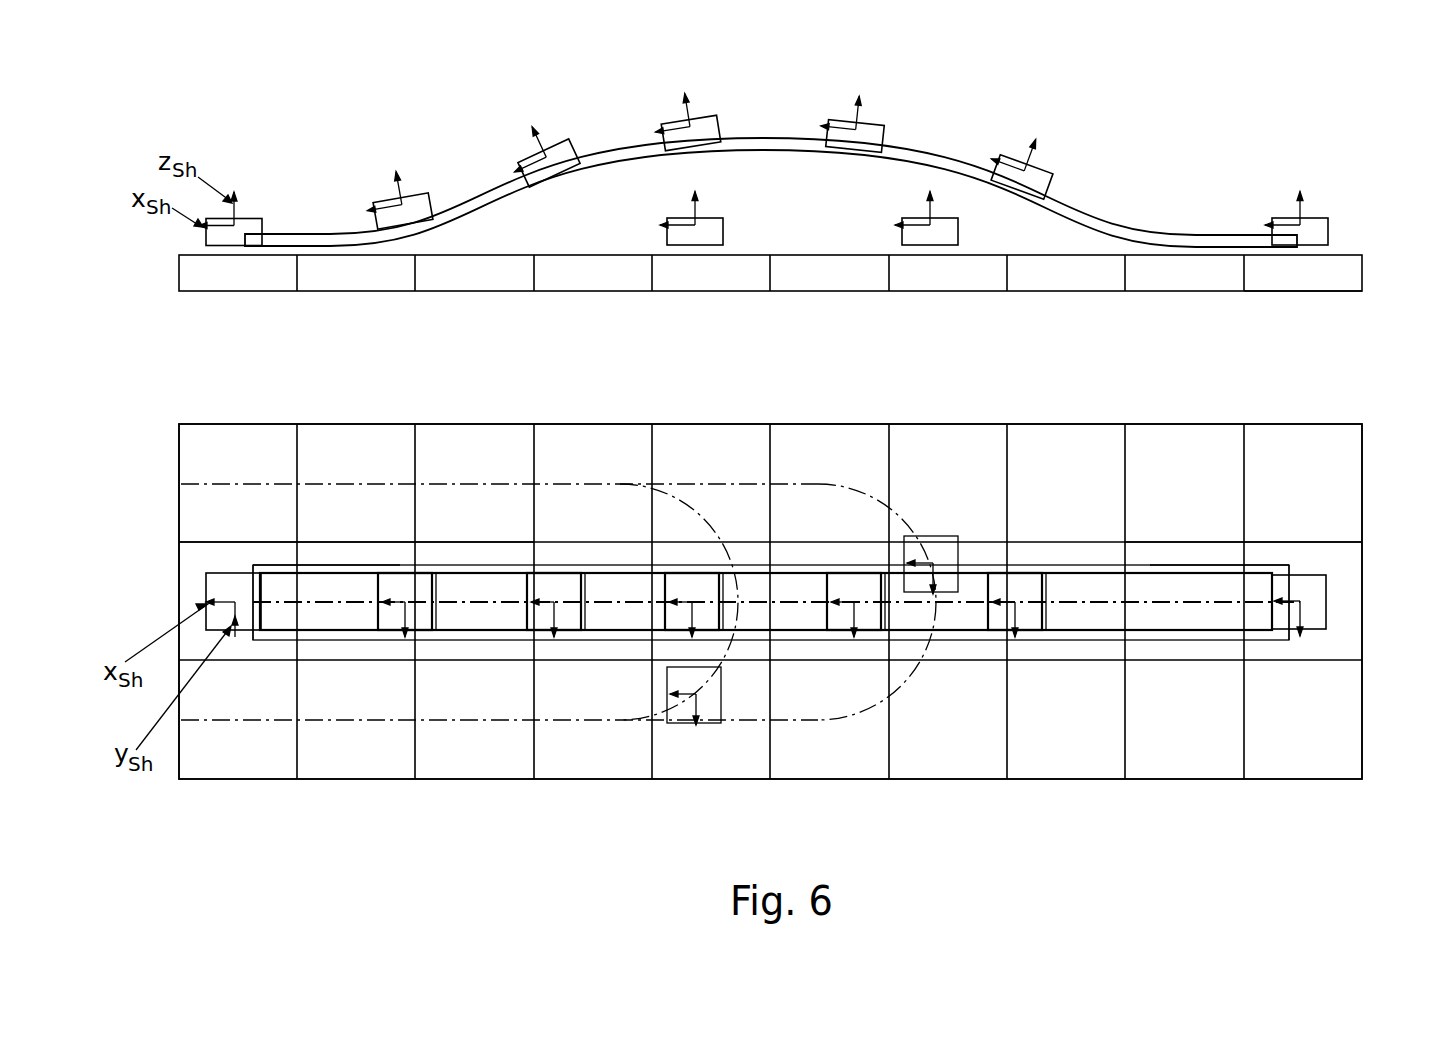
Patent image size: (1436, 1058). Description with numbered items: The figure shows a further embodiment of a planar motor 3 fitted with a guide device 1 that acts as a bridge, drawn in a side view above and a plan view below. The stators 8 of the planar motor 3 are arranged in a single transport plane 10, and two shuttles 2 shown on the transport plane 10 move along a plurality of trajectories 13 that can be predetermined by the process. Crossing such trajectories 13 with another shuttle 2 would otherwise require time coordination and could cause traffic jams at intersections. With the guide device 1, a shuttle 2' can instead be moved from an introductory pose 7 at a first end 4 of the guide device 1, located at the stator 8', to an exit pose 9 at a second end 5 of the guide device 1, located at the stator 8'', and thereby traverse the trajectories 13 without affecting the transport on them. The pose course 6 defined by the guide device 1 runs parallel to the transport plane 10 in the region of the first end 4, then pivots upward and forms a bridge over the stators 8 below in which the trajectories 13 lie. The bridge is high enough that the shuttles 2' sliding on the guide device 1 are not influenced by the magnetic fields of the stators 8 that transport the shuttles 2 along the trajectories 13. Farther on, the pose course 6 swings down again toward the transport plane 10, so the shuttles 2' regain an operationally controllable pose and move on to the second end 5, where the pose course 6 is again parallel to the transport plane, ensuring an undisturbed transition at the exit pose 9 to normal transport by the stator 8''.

The guide device 1 is at (935, 167).
The shuttle 2 is at (712, 468).
The shuttle 2' is at (708, 112).
The planar motor 3 is at (1149, 813).
The first end 4 is at (1289, 575).
The second end 5 is at (255, 567).
The pose course 6 is at (782, 602).
The introductory pose 7 is at (1326, 601).
The stator 8 is at (770, 517).
The stator 8' is at (1269, 536).
The stator 8'' is at (326, 528).
The exit pose 9 is at (206, 590).
The transport plane 10 is at (1350, 253).
The trajectory 13 is at (327, 484).